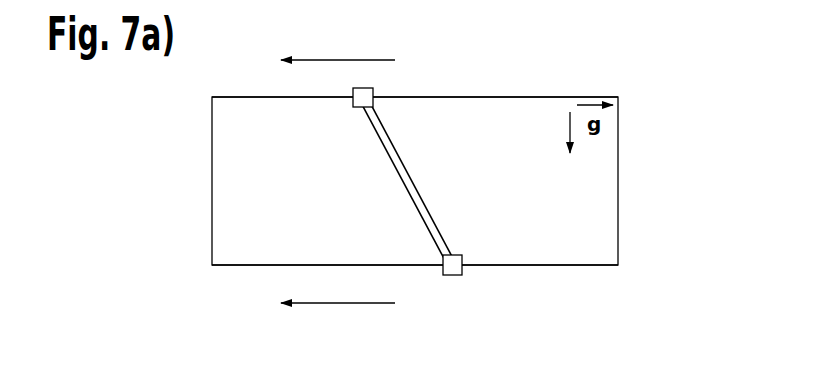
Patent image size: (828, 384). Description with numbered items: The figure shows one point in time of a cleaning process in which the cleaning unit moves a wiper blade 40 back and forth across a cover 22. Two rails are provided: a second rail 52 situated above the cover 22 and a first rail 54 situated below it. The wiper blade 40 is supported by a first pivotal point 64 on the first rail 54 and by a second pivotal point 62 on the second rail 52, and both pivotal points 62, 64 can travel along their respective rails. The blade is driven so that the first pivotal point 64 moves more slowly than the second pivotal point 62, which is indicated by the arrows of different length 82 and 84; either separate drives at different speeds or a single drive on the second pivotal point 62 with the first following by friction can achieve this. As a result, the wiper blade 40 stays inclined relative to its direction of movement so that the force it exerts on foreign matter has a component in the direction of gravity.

The cover 22 is at (608, 207).
The wiper blade 40 is at (385, 133).
The second rail 52 is at (580, 97).
The first rail 54 is at (582, 265).
The second pivotal point 62 is at (373, 96).
The first pivotal point 64 is at (452, 275).
The arrow 82 is at (347, 58).
The arrow 84 is at (323, 303).